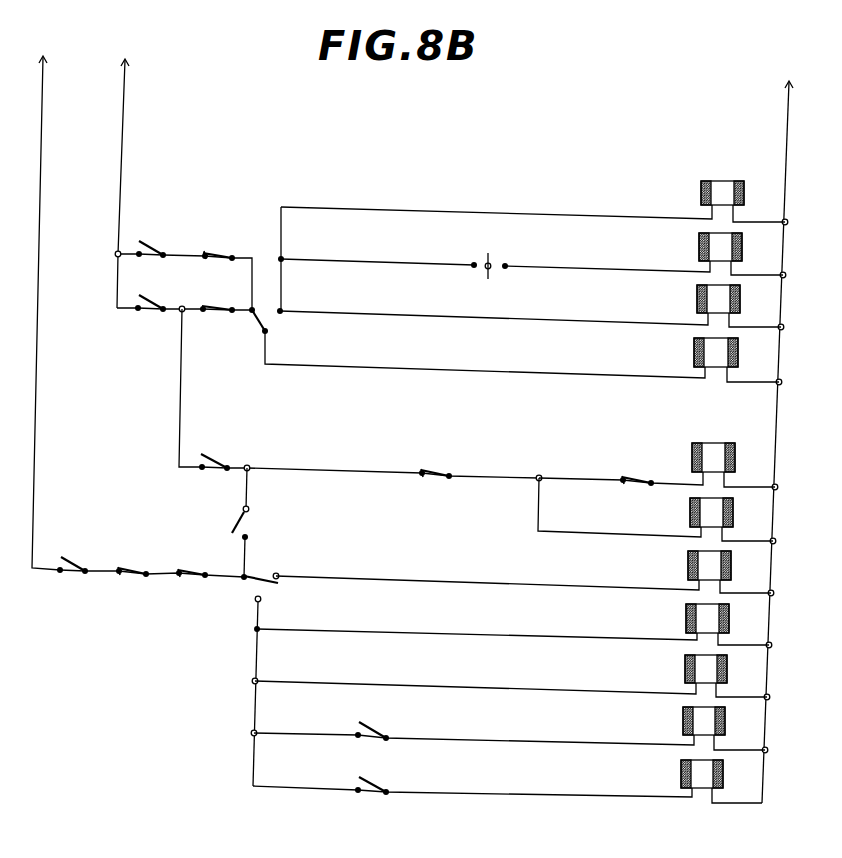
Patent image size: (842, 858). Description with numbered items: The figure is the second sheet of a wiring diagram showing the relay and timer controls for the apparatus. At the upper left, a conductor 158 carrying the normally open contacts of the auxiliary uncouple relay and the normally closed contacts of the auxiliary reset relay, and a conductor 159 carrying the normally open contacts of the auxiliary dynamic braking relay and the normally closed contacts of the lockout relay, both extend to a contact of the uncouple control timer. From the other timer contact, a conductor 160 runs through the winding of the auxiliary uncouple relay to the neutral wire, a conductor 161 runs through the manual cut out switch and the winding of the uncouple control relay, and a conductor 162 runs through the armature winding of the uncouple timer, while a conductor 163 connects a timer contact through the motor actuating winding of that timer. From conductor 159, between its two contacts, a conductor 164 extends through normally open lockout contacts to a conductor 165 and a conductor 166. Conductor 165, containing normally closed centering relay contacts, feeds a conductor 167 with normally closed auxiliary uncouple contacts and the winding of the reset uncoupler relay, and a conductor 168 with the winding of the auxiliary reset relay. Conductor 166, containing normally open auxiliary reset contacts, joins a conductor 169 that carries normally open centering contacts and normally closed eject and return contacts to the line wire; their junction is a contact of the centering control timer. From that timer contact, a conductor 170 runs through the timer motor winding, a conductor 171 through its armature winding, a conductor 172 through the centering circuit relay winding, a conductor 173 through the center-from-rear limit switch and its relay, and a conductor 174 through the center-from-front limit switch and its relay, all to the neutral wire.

The conductor 158 is at (190, 259).
The conductor 159 is at (171, 309).
The conductor 160 is at (399, 188).
The conductor 161 is at (363, 260).
The conductor 162 is at (369, 311).
The conductor 163 is at (368, 364).
The conductor 164 is at (180, 388).
The conductor 165 is at (314, 467).
The conductor 166 is at (247, 483).
The conductor 167 is at (582, 457).
The conductor 168 is at (589, 511).
The conductor 169 is at (32, 484).
The conductor 170 is at (420, 580).
The conductor 171 is at (419, 634).
The conductor 172 is at (420, 686).
The conductor 173 is at (428, 740).
The conductor 174 is at (419, 794).